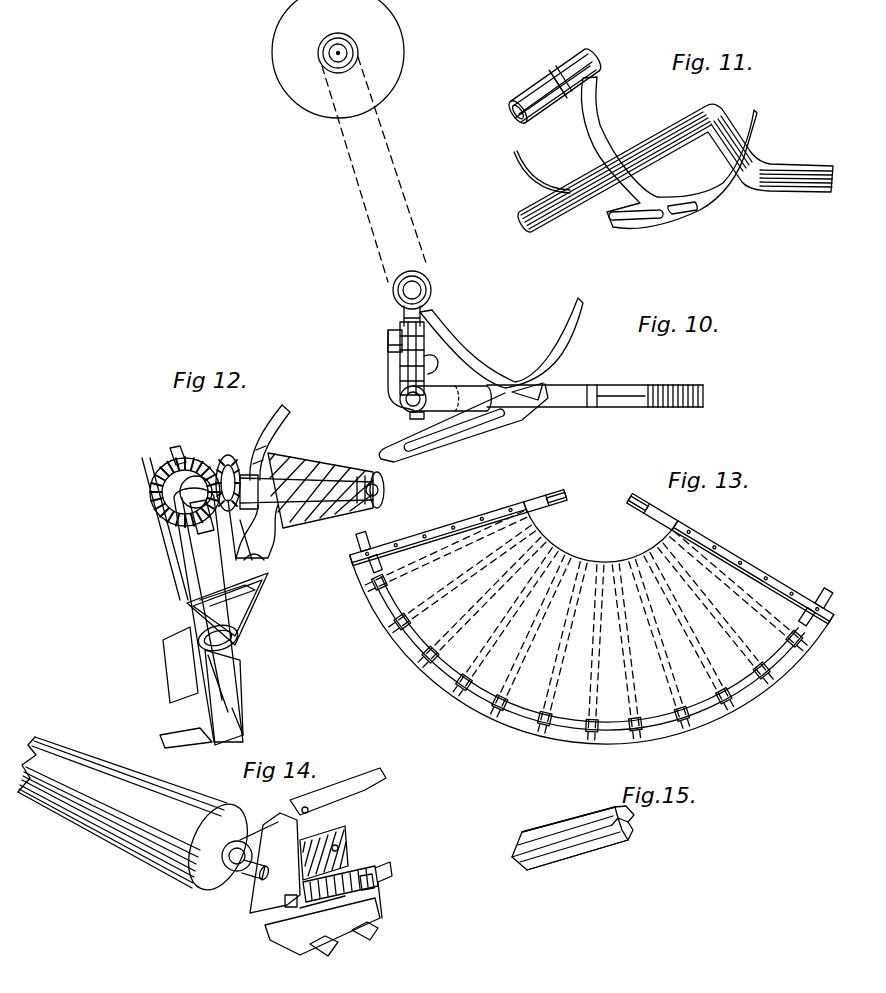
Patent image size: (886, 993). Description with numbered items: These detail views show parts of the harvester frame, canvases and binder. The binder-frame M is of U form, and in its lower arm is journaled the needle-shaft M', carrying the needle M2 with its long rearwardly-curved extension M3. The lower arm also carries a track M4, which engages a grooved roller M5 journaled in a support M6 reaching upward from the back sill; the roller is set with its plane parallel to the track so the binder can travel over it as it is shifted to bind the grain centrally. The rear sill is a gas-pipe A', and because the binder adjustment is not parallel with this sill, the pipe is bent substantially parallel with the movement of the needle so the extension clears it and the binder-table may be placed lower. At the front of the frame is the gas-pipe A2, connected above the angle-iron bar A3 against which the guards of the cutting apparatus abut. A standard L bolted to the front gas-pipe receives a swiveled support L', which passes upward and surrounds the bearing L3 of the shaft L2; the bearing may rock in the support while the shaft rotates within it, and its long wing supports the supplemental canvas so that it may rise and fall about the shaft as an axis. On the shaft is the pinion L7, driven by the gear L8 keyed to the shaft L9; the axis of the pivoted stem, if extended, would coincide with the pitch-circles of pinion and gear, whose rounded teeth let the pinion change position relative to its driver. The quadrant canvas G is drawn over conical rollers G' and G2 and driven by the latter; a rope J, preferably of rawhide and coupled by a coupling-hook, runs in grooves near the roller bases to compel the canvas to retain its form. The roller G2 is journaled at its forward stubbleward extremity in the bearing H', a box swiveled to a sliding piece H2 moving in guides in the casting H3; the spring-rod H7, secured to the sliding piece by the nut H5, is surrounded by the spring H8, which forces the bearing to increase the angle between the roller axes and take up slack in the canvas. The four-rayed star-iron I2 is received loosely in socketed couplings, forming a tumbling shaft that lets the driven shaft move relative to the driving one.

In FIG. 10, the binder-frame M is at (421, 285).
In FIG. 11, the binder-frame M is at (553, 87).
In FIG. 10, the needle-shaft M' is at (429, 289).
In FIG. 11, the needle-shaft M' is at (580, 67).
In FIG. 10, the needle M2 is at (585, 306).
In FIG. 11, the needle M2 is at (670, 208).
In FIG. 10, the needle extension M3 is at (441, 452).
In FIG. 11, the needle extension M3 is at (563, 180).
In FIG. 10, the track M4 is at (424, 314).
In FIG. 10, the grooved roller M5 is at (427, 366).
In FIG. 10, the support M6 is at (394, 378).
In FIG. 10, the gas-pipe A' is at (436, 404).
In FIG. 11, the gas-pipe A' is at (675, 168).
In FIG. 12, the standard L is at (201, 615).
In FIG. 12, the swiveled support L' is at (254, 530).
In FIG. 12, the shaft L2 is at (334, 515).
In FIG. 12, the bearing L3 is at (266, 433).
In FIG. 12, the pinion L7 is at (230, 462).
In FIG. 12, the gear L8 is at (172, 465).
In FIG. 12, the shaft L9 is at (175, 446).
In FIG. 12, the gas-pipe A2 is at (238, 638).
In FIG. 12, the angle-iron bar A3 is at (240, 660).
In FIG. 13, the quadrant canvas G is at (592, 623).
In FIG. 13, the conical roller G' is at (735, 551).
In FIG. 13, the conical roller G2 is at (553, 500).
In FIG. 14, the conical roller G2 is at (138, 817).
In FIG. 13, the rope J is at (574, 725).
In FIG. 14, the bearing H' is at (246, 871).
In FIG. 14, the sliding piece H2 is at (278, 880).
In FIG. 14, the casting H3 is at (300, 936).
In FIG. 14, the nut H5 is at (284, 900).
In FIG. 14, the spring-rod H7 is at (373, 880).
In FIG. 14, the spring H8 is at (374, 884).
In FIG. 15, the star-iron I2 is at (577, 826).